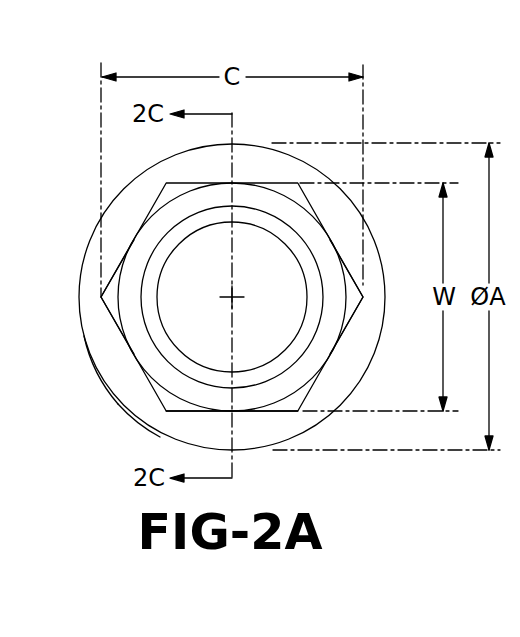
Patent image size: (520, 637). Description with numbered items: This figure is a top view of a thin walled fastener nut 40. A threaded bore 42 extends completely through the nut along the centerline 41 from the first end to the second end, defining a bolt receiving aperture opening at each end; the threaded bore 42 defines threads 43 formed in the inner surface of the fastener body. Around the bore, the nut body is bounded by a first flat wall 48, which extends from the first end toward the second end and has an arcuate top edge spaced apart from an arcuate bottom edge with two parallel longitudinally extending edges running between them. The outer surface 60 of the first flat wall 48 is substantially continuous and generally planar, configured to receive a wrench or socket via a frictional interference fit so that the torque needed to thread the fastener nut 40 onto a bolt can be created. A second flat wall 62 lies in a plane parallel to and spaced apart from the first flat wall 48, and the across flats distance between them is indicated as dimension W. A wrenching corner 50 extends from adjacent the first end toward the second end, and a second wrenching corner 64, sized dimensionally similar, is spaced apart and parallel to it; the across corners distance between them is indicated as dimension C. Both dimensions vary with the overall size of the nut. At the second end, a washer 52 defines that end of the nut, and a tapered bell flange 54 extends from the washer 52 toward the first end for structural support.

The fastener nut 40 is at (314, 471).
The centerline 41 is at (237, 301).
The threaded bore 42 is at (294, 244).
The threads 43 is at (232, 243).
The first flat wall 48 is at (187, 416).
The wrenching corner 50 is at (363, 297).
The washer 52 is at (124, 394).
The tapered bell flange 54 is at (114, 371).
The outer surface 60 is at (186, 437).
The second flat wall 62 is at (187, 179).
The second wrenching corner 64 is at (101, 297).